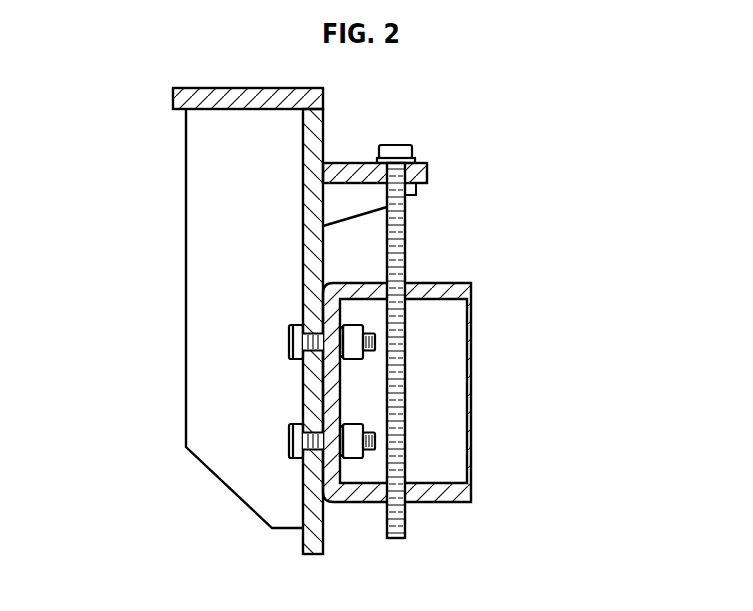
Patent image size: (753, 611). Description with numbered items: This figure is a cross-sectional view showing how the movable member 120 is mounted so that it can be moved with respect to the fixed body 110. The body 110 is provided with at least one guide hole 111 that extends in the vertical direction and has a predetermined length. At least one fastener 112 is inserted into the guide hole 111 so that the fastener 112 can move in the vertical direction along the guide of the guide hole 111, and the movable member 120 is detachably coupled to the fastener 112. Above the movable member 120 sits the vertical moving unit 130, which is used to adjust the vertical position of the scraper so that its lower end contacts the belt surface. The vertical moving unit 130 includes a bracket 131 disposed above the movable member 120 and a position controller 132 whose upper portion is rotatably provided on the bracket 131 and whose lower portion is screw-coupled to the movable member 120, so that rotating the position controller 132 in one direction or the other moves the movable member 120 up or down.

The body 110 is at (197, 185).
The guide hole 111 is at (305, 386).
The fastener 112 is at (296, 343).
The movable member 120 is at (465, 326).
The vertical moving unit 130 is at (523, 240).
The bracket 131 is at (423, 161).
The position controller 132 is at (402, 223).